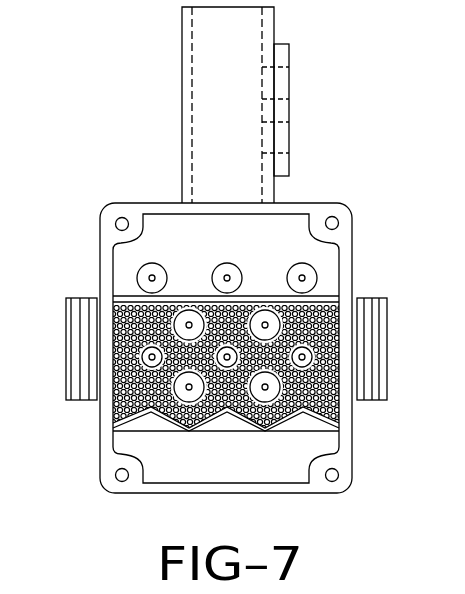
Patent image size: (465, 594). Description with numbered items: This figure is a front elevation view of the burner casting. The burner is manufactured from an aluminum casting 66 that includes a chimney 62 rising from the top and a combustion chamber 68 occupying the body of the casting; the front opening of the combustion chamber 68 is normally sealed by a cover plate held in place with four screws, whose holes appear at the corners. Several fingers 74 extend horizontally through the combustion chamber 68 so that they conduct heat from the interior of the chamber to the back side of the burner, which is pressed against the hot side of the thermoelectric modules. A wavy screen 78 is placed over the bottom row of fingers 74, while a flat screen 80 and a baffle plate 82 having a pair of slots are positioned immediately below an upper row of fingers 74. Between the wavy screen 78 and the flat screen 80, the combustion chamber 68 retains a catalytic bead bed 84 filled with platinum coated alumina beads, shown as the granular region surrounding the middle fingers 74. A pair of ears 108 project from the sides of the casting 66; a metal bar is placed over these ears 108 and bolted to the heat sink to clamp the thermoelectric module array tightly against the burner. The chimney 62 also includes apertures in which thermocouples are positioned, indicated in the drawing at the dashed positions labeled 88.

The chimney 62 is at (182, 75).
The aluminum casting 66 is at (77, 185).
The combustion chamber 68 is at (205, 255).
The fingers 74 is at (298, 262).
The wavy screen 78 is at (268, 432).
The flat screen 80 is at (323, 302).
The baffle plate 82 is at (130, 297).
The catalytic bead bed 84 is at (132, 400).
The connector slots 88 is at (282, 84).
The ears 108 is at (65, 373).